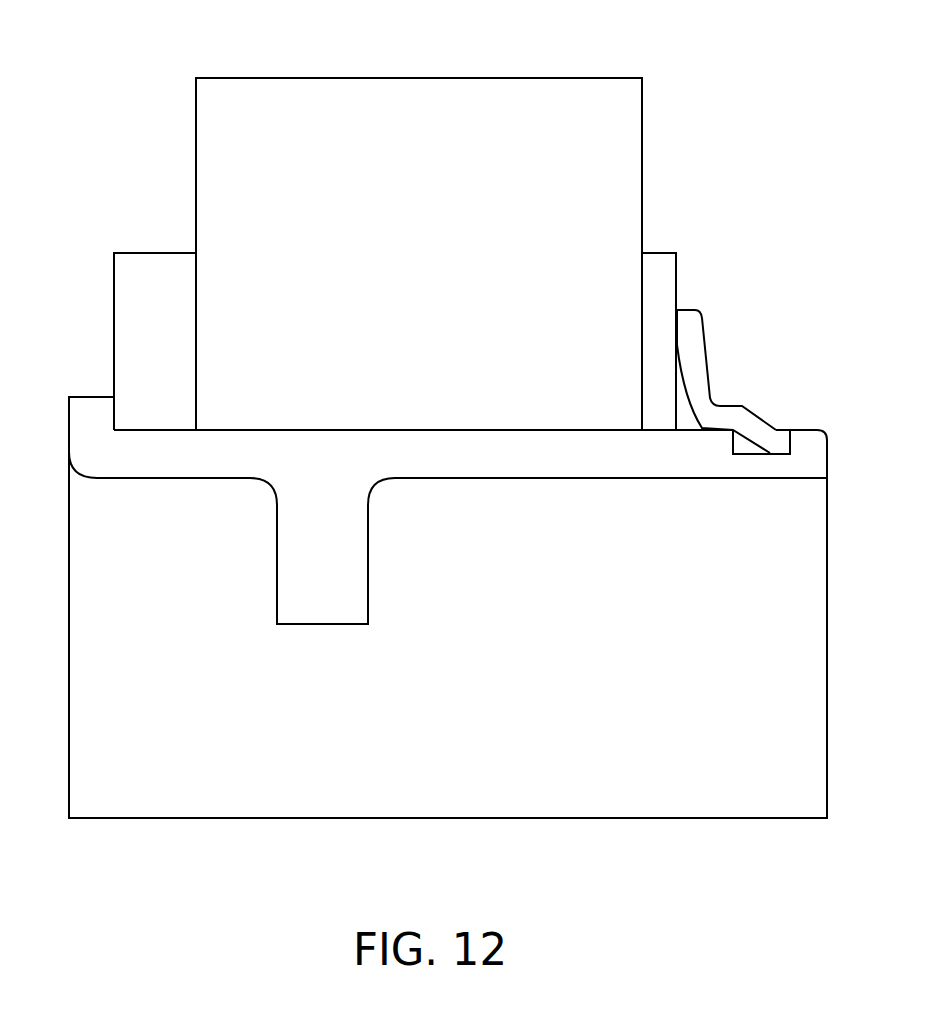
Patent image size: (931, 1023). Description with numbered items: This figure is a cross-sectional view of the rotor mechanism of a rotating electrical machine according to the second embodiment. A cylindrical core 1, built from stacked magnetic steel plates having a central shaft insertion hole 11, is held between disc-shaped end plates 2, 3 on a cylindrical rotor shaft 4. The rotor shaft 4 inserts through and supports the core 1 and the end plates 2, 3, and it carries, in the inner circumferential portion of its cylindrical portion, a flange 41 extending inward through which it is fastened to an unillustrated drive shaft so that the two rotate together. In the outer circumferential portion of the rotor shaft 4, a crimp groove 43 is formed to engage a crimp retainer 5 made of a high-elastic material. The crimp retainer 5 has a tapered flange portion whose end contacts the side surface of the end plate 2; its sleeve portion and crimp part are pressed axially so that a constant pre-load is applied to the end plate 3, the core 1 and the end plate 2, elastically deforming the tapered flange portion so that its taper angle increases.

The core 1 is at (394, 243).
The end plate 2 is at (666, 260).
The end plate 3 is at (155, 250).
The rotor shaft 4 is at (83, 390).
The crimp retainer 5 is at (745, 323).
The shaft insertion hole 11 is at (248, 430).
The flange 41 is at (288, 579).
The crimp groove 43 is at (748, 455).